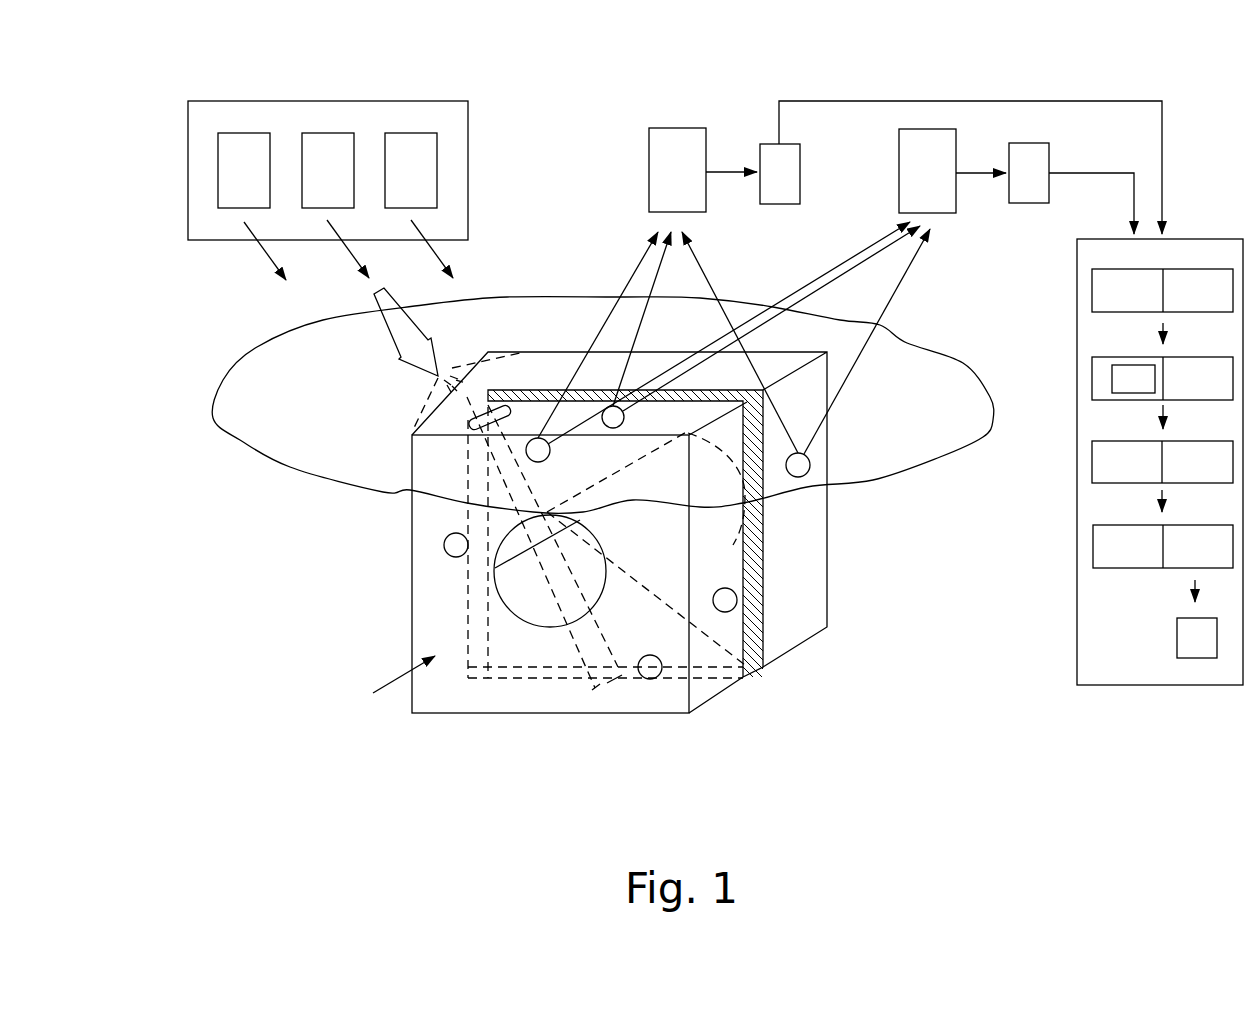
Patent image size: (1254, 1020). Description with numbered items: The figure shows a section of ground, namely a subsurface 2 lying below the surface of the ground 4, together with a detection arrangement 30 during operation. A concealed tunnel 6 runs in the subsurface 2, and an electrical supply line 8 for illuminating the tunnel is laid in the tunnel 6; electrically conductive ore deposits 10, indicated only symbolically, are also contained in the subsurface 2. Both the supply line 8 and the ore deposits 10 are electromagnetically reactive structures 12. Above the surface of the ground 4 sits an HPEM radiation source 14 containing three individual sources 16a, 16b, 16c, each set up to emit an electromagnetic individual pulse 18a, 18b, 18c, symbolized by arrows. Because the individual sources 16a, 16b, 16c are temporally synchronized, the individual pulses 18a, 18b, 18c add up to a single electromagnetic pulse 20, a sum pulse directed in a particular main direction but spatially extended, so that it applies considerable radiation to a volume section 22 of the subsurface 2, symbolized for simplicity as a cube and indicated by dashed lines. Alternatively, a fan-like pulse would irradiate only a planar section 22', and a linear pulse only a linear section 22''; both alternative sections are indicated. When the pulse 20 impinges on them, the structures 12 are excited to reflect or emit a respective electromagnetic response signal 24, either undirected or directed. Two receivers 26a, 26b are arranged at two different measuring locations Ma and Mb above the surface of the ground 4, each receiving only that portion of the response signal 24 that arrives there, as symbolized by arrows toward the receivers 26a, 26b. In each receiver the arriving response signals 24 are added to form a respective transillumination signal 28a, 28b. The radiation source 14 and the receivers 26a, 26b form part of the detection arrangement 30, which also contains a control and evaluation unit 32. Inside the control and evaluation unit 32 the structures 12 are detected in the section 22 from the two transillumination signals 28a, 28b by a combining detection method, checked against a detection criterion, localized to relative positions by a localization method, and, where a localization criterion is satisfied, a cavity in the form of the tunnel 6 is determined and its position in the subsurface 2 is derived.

The subsurface 2 is at (162, 492).
The surface of the ground 4 is at (240, 387).
The tunnel 6 is at (547, 621).
The electrical supply line 8 is at (517, 557).
The ore deposits 10 is at (603, 405).
The electromagnetically reactive structures 12 is at (626, 530).
The HPEM radiation source 14 is at (468, 162).
The individual source 16a is at (260, 133).
The individual source 16b is at (344, 133).
The individual source 16c is at (405, 133).
The electromagnetic individual pulse 18a is at (265, 250).
The electromagnetic individual pulse 18b is at (349, 248).
The electromagnetic individual pulse 18c is at (440, 255).
The electromagnetic pulse 20 is at (430, 350).
The volume section 22 is at (662, 532).
The planar section 22' is at (700, 533).
The linear section 22'' is at (550, 521).
The electromagnetic response signal 24 is at (660, 265).
The receiver 26a is at (667, 128).
The receiver 26b is at (899, 170).
The transillumination signal 28a is at (801, 160).
The transillumination signal 28b is at (1010, 193).
The detection arrangement 30 is at (634, 74).
The control and evaluation unit 32 is at (1157, 685).